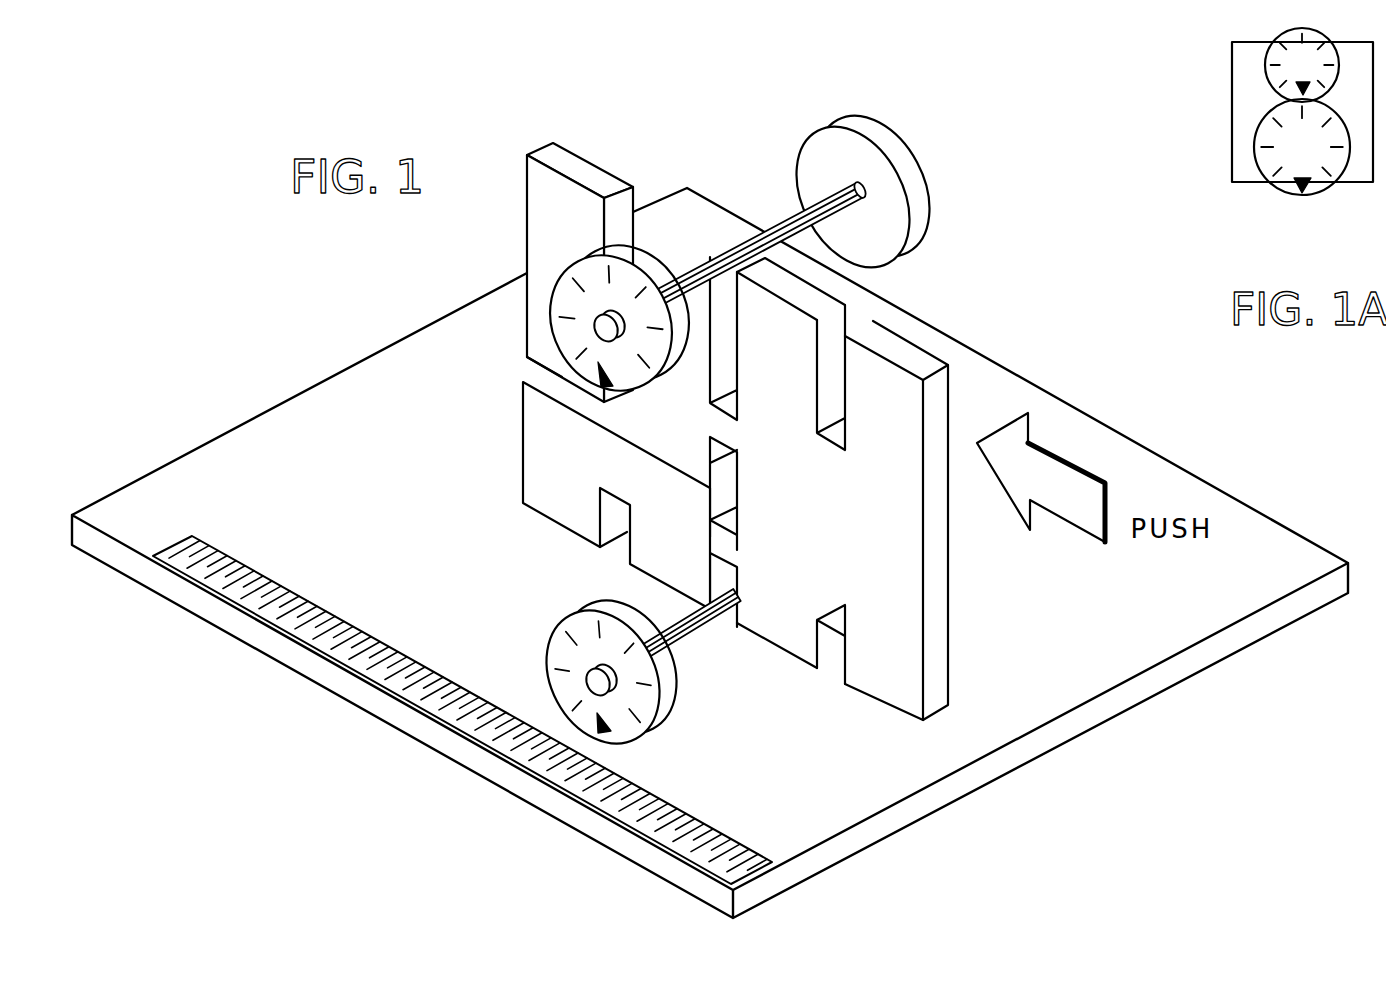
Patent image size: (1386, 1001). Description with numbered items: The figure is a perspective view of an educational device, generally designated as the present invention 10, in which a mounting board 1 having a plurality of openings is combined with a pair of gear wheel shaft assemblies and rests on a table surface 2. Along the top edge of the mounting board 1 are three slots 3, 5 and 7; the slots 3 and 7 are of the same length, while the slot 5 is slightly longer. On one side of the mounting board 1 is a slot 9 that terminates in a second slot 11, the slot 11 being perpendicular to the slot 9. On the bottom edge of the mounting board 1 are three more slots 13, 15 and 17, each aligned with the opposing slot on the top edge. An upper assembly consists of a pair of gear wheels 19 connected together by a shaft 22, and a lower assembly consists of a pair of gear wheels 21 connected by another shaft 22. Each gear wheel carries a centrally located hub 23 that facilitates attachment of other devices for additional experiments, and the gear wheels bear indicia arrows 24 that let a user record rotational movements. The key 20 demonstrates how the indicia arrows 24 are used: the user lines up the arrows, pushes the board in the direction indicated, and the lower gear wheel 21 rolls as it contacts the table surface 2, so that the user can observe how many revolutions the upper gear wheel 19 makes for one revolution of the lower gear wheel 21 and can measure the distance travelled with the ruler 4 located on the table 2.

In FIG. 1, the mounting board 1 is at (829, 493).
In FIG. 1, the table surface 2 is at (573, 374).
In FIG. 1, the slot 3 is at (847, 330).
In FIG. 1, the ruler 4 is at (388, 678).
In FIG. 1, the slot 5 is at (727, 330).
In FIG. 1, the slot 7 is at (638, 201).
In FIG. 1, the slot 9 is at (548, 376).
In FIG. 1, the present invention 10 is at (1019, 599).
In FIG. 1, the second slot 11 is at (656, 495).
In FIG. 1, the slot 13 is at (620, 538).
In FIG. 1, the slot 15 is at (730, 574).
In FIG. 1, the slot 17 is at (828, 666).
In FIG. 1, the gear wheel 19 is at (908, 160).
In FIG. 1A, the key 20 is at (1220, 220).
In FIG. 1, the gear wheel 21 is at (562, 683).
In FIG. 1, the shaft 22 is at (793, 222).
In FIG. 1, the hub 23 is at (592, 330).
In FIG. 1, the indicia arrow 24 is at (613, 384).